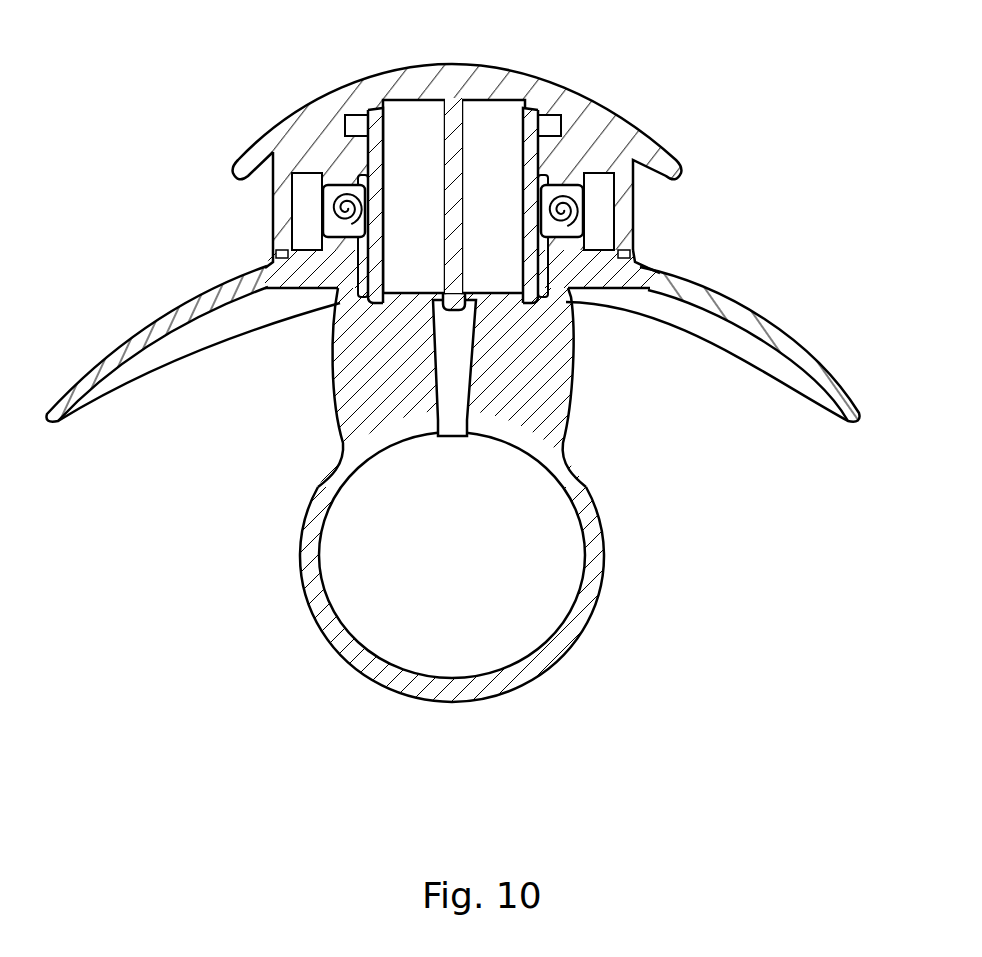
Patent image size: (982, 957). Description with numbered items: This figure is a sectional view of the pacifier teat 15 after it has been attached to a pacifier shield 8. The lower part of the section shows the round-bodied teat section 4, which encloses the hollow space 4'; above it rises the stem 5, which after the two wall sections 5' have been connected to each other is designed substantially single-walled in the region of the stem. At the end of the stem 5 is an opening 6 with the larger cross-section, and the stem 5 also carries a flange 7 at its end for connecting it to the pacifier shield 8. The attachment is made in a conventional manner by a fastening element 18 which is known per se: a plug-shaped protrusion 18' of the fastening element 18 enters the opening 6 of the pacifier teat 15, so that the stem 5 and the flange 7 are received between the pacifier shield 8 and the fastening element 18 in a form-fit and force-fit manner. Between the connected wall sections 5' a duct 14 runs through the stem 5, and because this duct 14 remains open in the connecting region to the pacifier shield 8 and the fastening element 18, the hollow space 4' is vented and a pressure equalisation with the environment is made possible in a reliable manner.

The teat section 4 is at (452, 610).
The hollow space 4' is at (424, 555).
The stem 5 is at (409, 387).
The wall sections 5' is at (581, 387).
The opening 6 is at (500, 158).
The flange 7 is at (585, 207).
The pacifier shield 8 is at (760, 340).
The duct 14 is at (452, 402).
The pacifier teat 15 is at (636, 595).
The fastening element 18 is at (468, 163).
The plug-shaped protrusion 18' is at (457, 331).